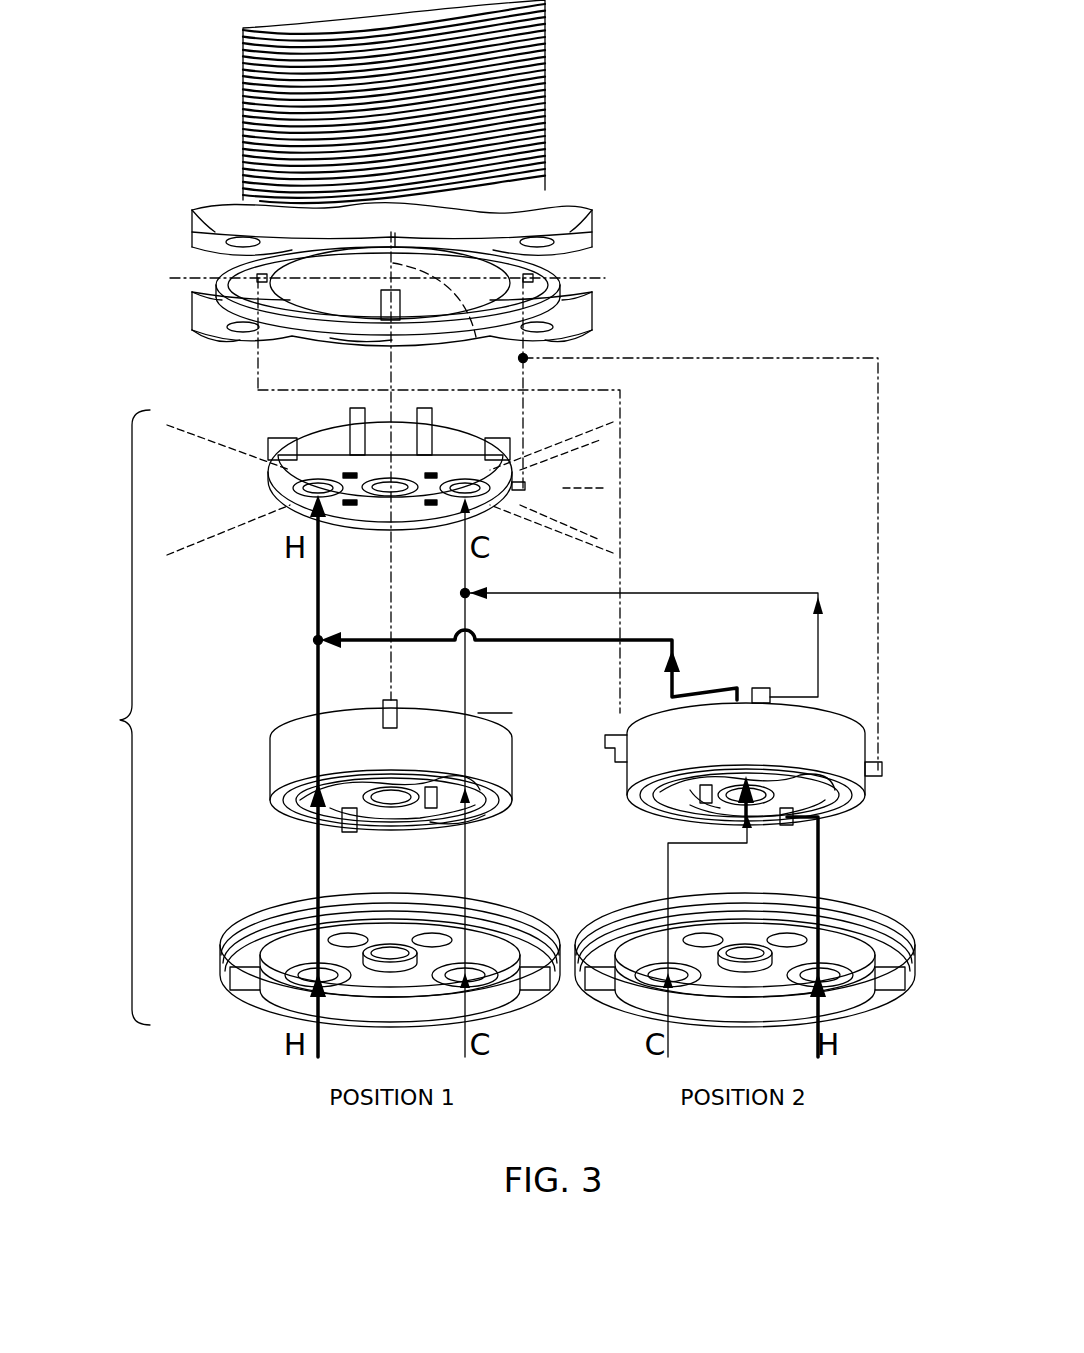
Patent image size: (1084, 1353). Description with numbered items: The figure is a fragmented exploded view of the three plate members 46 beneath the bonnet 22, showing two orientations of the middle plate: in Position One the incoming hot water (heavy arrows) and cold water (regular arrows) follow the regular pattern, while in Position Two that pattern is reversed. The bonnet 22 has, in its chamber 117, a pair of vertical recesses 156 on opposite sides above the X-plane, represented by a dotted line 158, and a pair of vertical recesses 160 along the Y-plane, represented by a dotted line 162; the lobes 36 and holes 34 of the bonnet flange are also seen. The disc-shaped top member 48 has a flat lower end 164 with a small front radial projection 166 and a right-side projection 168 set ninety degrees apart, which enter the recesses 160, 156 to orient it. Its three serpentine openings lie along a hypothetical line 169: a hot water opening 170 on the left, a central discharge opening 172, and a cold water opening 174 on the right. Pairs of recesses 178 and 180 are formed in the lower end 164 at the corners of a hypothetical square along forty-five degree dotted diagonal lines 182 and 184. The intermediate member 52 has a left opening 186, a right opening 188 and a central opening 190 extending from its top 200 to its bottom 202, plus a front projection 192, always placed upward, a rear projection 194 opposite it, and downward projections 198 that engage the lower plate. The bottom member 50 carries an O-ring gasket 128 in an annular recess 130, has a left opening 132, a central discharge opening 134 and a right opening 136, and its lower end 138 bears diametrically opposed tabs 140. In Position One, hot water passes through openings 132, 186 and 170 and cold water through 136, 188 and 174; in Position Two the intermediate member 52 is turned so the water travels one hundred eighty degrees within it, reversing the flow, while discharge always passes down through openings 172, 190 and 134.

The bonnet 22 is at (556, 122).
The chamber 117 is at (480, 262).
The mounting lobes 36 is at (222, 232).
The mounting holes 34 is at (192, 245).
The vertical recesses 156 is at (222, 278).
The dotted line 158 is at (192, 318).
The vertical recesses 160 is at (395, 233).
The central opening 172 is at (379, 478).
The radial outward projection 166 is at (392, 487).
The dotted line 162 is at (568, 501).
The recesses 180 is at (352, 475).
The recesses 178 is at (432, 475).
The radial outward projection 168 is at (518, 487).
The hypothetical line 169 is at (603, 488).
The dotted diagonal line 182 is at (561, 463).
The dotted diagonal line 184 is at (567, 515).
The top member 48 is at (263, 485).
The hot water opening 170 is at (305, 505).
The flat lower end 164 is at (305, 517).
The cold water opening 174 is at (487, 490).
The plate members 46 is at (114, 717).
The intermediate member 52 is at (262, 750).
The front projection 192 is at (397, 707).
The top 200 is at (478, 713).
The opening 186 is at (282, 787).
The opening 188 is at (487, 803).
The downwardly extending projections 198 is at (350, 822).
The central opening 190 is at (392, 802).
The bottom 202 is at (480, 823).
The rear projection 194 is at (880, 770).
The bottom member 50 is at (283, 890).
The annular recess 130 is at (252, 937).
The O-ring gasket 128 is at (222, 950).
The tabs 140 is at (237, 990).
The opening 132 is at (303, 985).
The lower end 138 is at (360, 1020).
The central discharge opening 134 is at (388, 962).
The opening 136 is at (487, 984).